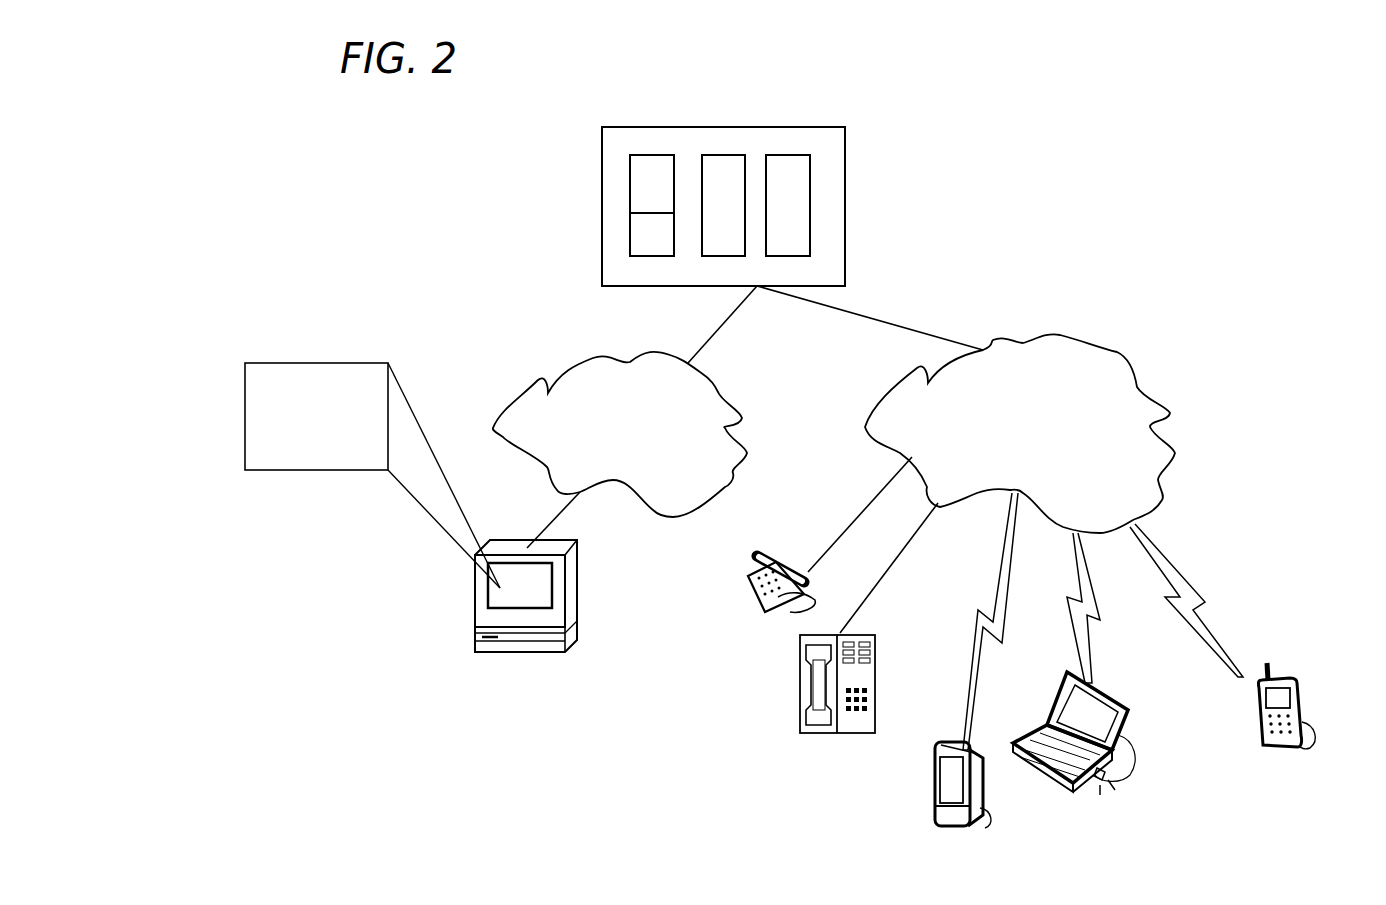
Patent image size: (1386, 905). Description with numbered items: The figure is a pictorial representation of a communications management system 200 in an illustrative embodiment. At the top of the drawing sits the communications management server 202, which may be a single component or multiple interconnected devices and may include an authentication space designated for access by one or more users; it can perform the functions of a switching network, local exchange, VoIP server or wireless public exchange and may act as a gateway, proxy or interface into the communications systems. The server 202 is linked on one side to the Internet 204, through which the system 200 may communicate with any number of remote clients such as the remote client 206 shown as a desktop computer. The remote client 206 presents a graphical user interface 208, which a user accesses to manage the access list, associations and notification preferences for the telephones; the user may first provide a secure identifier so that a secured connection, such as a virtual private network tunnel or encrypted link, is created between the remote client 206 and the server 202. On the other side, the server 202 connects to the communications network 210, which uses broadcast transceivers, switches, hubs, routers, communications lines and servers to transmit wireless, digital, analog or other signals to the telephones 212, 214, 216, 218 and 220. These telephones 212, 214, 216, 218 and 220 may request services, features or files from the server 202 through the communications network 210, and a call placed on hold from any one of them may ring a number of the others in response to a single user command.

The communications management system 200 is at (290, 180).
The communications management server 202 is at (829, 142).
The Internet 204 is at (638, 460).
The remote client 206 is at (468, 629).
The graphical user interface 208 is at (299, 465).
The communications network 210 is at (1036, 460).
The telephone 212 is at (823, 552).
The telephone 214 is at (869, 636).
The telephone 216 is at (976, 679).
The telephone 218 is at (1092, 664).
The telephone 220 is at (1222, 657).